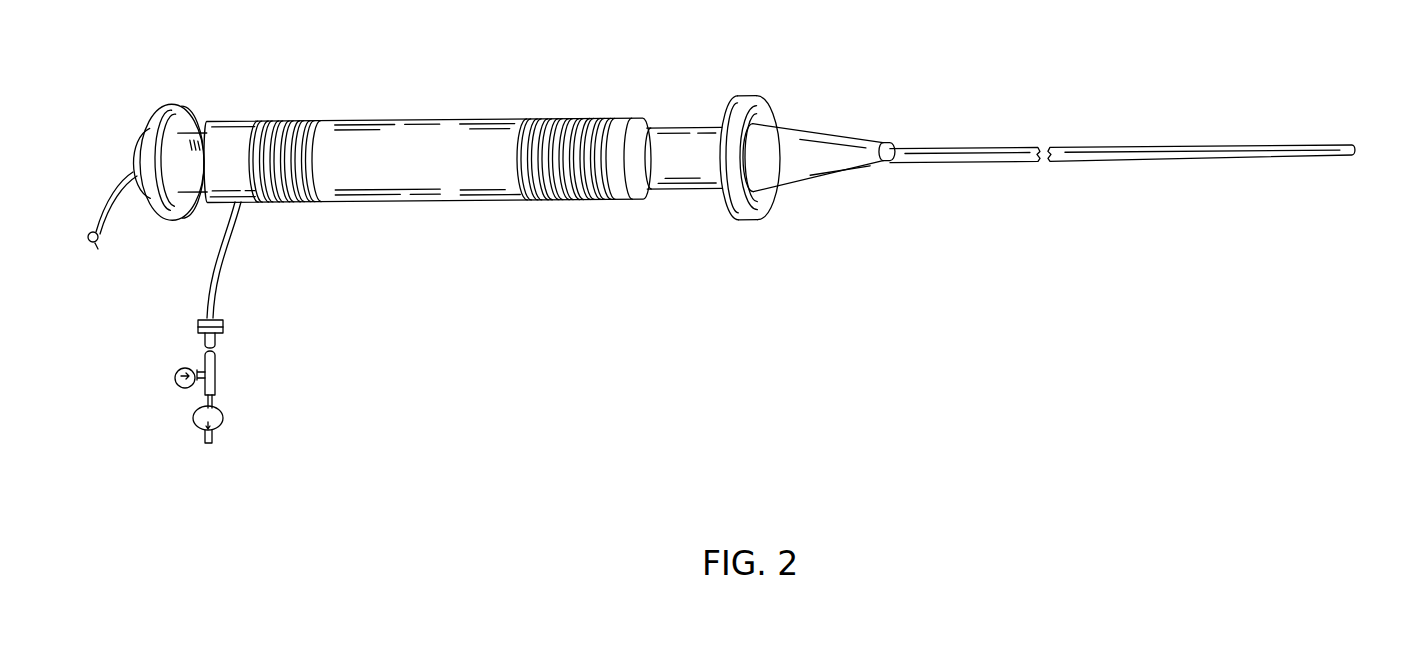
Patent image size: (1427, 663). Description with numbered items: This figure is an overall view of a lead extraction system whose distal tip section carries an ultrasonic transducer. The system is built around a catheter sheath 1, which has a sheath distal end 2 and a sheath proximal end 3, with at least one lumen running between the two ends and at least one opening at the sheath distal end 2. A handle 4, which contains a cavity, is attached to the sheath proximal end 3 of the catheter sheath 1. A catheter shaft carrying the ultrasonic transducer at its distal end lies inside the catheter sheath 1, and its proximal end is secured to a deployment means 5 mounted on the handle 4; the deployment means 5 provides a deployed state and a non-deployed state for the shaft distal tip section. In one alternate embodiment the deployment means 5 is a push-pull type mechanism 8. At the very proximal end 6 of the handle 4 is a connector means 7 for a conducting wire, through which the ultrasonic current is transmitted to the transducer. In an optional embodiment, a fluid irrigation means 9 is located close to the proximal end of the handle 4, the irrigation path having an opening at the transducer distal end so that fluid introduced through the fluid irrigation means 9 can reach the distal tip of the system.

The catheter sheath 1 is at (998, 148).
The sheath distal end 2 is at (1345, 141).
The sheath proximal end 3 is at (895, 142).
The handle 4 is at (460, 205).
The deployment means 5 is at (690, 193).
The very proximal end of the handle 6 is at (143, 200).
The connector means 7 is at (104, 227).
The push-pull type mechanism 8 is at (747, 223).
The fluid irrigation means 9 is at (222, 360).